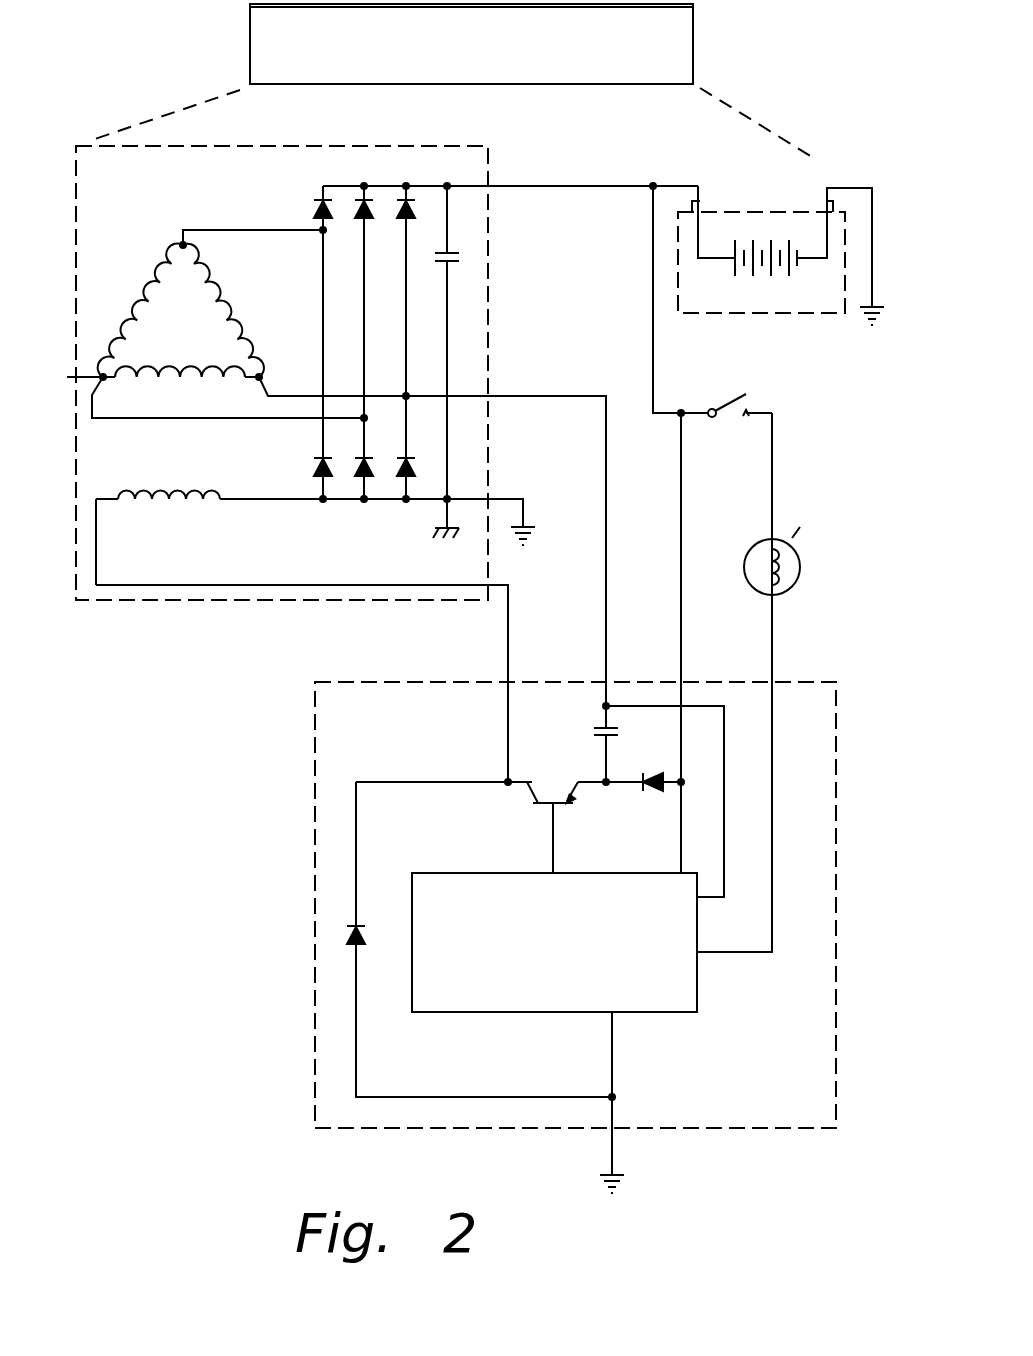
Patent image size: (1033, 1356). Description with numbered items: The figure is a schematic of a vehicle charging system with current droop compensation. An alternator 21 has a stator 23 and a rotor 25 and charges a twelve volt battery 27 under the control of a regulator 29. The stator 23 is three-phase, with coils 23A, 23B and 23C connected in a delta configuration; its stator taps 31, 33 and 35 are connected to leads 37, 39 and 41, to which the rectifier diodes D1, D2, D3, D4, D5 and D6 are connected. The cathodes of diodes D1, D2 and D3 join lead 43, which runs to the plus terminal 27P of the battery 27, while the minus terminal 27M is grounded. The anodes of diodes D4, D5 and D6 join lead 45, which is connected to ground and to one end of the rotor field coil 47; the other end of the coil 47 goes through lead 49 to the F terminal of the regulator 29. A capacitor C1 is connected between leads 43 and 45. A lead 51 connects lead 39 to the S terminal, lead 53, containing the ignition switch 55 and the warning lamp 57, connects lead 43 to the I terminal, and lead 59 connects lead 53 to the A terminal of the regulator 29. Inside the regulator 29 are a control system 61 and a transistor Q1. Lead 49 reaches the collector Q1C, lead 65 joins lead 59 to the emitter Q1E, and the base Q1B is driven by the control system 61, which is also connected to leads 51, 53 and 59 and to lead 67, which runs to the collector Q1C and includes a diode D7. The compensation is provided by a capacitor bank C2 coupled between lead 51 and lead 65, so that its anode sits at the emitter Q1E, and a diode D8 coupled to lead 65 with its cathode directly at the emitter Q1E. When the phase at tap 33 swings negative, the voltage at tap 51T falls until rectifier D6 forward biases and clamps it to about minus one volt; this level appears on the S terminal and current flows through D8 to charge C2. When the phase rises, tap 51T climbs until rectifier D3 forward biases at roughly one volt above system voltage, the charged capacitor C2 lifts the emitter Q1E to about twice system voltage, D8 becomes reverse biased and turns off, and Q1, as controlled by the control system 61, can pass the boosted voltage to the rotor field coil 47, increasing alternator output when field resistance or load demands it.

The alternator 21 is at (470, 136).
The stator 23 is at (193, 326).
The stator coil 23A is at (157, 277).
The stator coil 23B is at (224, 304).
The stator coil 23C is at (168, 382).
The rotor 25 is at (120, 598).
The battery 27 is at (774, 241).
The plus terminal 27P is at (713, 170).
The minus terminal 27M is at (822, 202).
The regulator 29 is at (838, 732).
The stator tap 31 is at (186, 245).
The stator tap 33 is at (256, 384).
The stator tap 35 is at (70, 377).
The lead 37 is at (264, 230).
The lead 39 is at (314, 396).
The lead 41 is at (248, 420).
The lead 43 is at (606, 186).
The lead 45 is at (268, 499).
The rotor field coil 47 is at (129, 491).
The lead 49 is at (213, 585).
The lead 51 is at (578, 401).
The tap 51T is at (406, 396).
The lead 53 is at (653, 292).
The ignition switch 55 is at (747, 413).
The warning lamp 57 is at (800, 572).
The lead 59 is at (683, 513).
The control system 61 is at (665, 1012).
The lead 65 is at (645, 784).
The lead 67 is at (397, 782).
The diode D1 is at (335, 195).
The diode D2 is at (377, 195).
The diode D3 is at (415, 195).
The diode D4 is at (320, 488).
The diode D5 is at (360, 487).
The diode D6 is at (403, 487).
The diode D7 is at (479, 939).
The diode D8 is at (637, 810).
The capacitor C1 is at (460, 362).
The capacitor bank C2 is at (639, 800).
The transistor Q1 is at (542, 814).
The collector Q1C is at (533, 791).
The base Q1B is at (550, 809).
The emitter Q1E is at (583, 786).